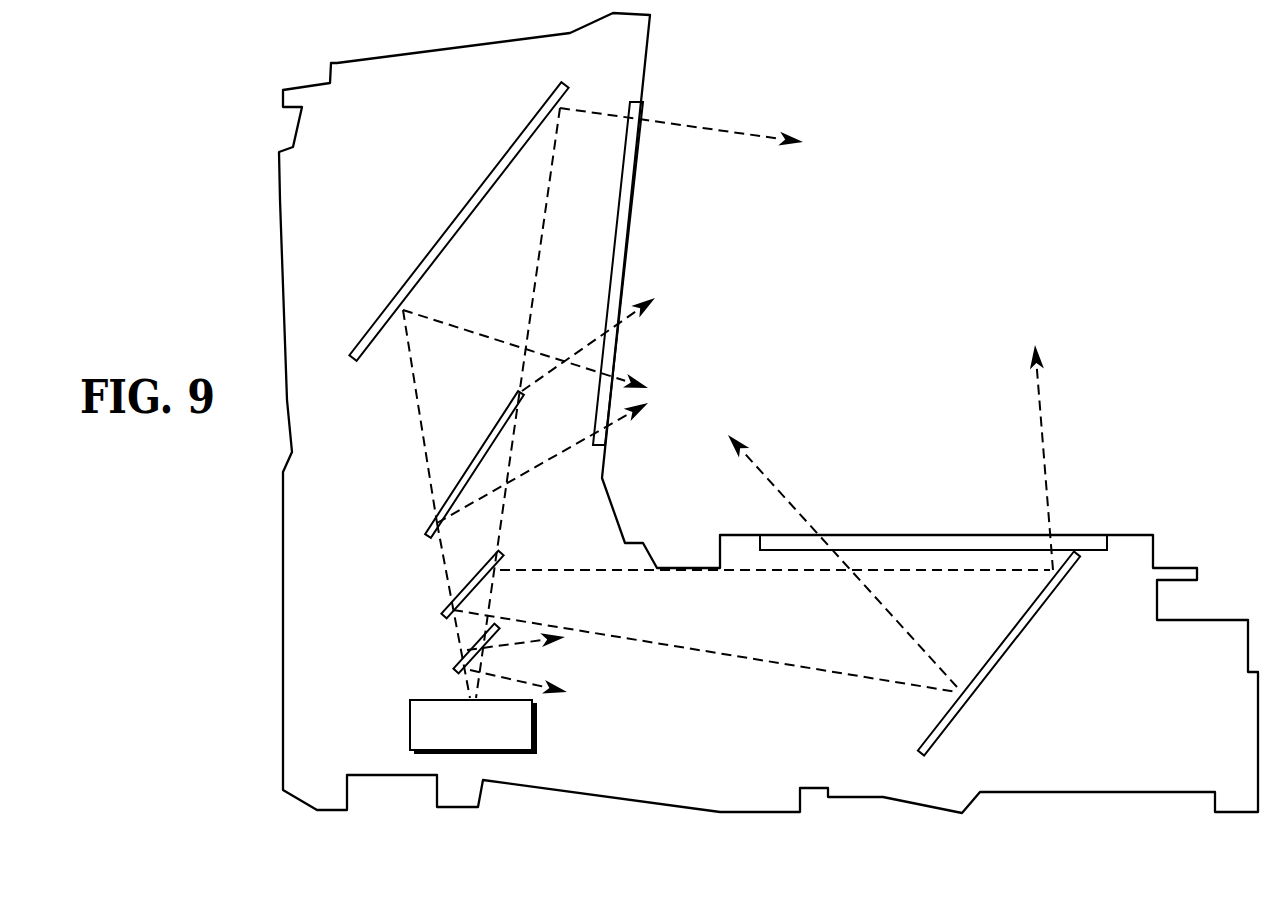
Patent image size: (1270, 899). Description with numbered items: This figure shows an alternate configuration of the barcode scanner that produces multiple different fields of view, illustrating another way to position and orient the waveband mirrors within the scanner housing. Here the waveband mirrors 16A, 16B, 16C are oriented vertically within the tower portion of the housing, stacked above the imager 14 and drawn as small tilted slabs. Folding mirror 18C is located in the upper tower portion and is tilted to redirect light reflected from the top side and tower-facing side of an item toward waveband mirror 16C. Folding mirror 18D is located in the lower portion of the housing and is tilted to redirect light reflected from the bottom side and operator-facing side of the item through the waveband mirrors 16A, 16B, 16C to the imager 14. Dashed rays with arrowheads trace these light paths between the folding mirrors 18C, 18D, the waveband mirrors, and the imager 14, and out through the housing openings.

The imager 14 is at (410, 720).
The waveband mirror 16A is at (458, 666).
The waveband mirror 16B is at (446, 610).
The waveband mirror 16C is at (430, 527).
The folding mirror 18C is at (472, 200).
The folding mirror 18D is at (1013, 645).